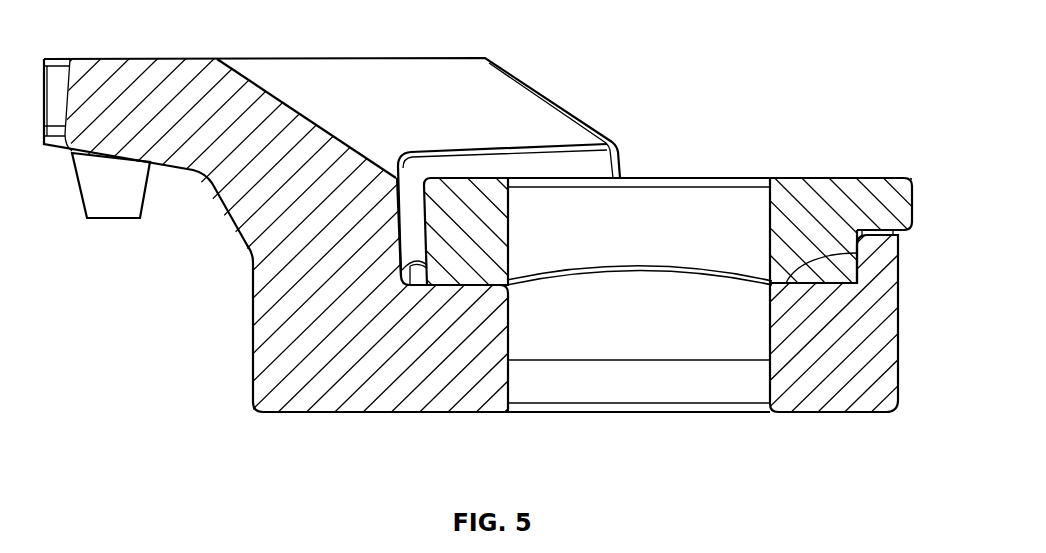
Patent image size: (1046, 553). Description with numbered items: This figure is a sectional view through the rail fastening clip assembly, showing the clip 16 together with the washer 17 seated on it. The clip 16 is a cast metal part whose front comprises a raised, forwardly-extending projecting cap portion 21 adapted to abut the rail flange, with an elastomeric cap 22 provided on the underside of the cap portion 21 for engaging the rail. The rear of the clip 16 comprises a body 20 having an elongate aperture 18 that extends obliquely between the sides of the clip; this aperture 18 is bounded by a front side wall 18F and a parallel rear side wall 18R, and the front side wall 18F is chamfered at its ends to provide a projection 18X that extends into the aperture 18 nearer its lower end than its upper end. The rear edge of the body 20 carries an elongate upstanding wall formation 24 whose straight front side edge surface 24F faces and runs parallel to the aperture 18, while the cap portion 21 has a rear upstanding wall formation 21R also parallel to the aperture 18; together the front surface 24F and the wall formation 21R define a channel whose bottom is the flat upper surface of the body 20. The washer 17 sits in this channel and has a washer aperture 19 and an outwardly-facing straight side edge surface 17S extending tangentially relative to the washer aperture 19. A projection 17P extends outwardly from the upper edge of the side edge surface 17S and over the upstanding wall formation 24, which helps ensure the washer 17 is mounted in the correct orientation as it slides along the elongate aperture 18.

The clip 16 is at (512, 70).
The washer 17 is at (851, 177).
The projection 17P is at (883, 200).
The outwardly-facing straight side edge surface 17S is at (768, 288).
The elongate aperture 18 is at (612, 335).
The front side wall 18F is at (507, 332).
The rear side wall 18R is at (768, 342).
The projection 18X is at (513, 363).
The washer aperture 19 is at (703, 200).
The body 20 is at (867, 312).
The projecting cap portion 21 is at (153, 82).
The rear upstanding wall formation 21R is at (402, 233).
The elastomeric cap 22 is at (108, 198).
The elongate upstanding wall formation 24 is at (873, 242).
The straight front side edge surface 24F is at (862, 268).